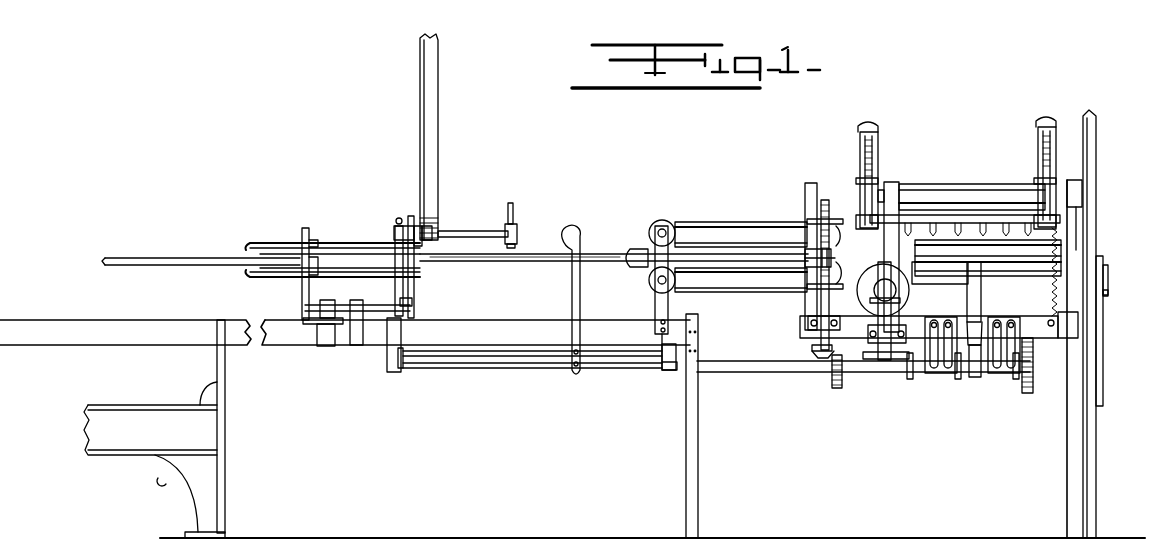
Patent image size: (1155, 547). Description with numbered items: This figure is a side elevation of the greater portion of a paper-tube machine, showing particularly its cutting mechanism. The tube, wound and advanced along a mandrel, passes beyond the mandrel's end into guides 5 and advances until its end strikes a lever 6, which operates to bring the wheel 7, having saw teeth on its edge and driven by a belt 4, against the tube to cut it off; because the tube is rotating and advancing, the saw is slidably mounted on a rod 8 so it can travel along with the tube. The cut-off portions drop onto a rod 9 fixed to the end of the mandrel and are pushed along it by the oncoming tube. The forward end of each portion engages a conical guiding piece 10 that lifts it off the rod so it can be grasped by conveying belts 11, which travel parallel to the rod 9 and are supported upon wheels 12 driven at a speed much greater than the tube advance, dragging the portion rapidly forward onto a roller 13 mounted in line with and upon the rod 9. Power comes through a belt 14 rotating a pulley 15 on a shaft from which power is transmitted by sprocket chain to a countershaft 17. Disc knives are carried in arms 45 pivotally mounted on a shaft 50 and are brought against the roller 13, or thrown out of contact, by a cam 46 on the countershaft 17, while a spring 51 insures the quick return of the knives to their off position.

The belt 4 is at (425, 135).
The guides 5 is at (272, 250).
The lever 6 is at (575, 232).
The wheel 7 is at (415, 217).
The rod 8 is at (468, 232).
The rod 9 is at (530, 248).
The conical guiding piece 10 is at (630, 248).
The belts 11 is at (720, 222).
The wheels 12 is at (658, 226).
The roller 13 is at (1042, 252).
The belt 14 is at (1093, 130).
The pulley 15 is at (1100, 374).
The countershaft 17 is at (865, 378).
The arms 45 is at (880, 155).
The cam 46 is at (977, 378).
The shaft 50 is at (1017, 194).
The spring 51 is at (1052, 292).